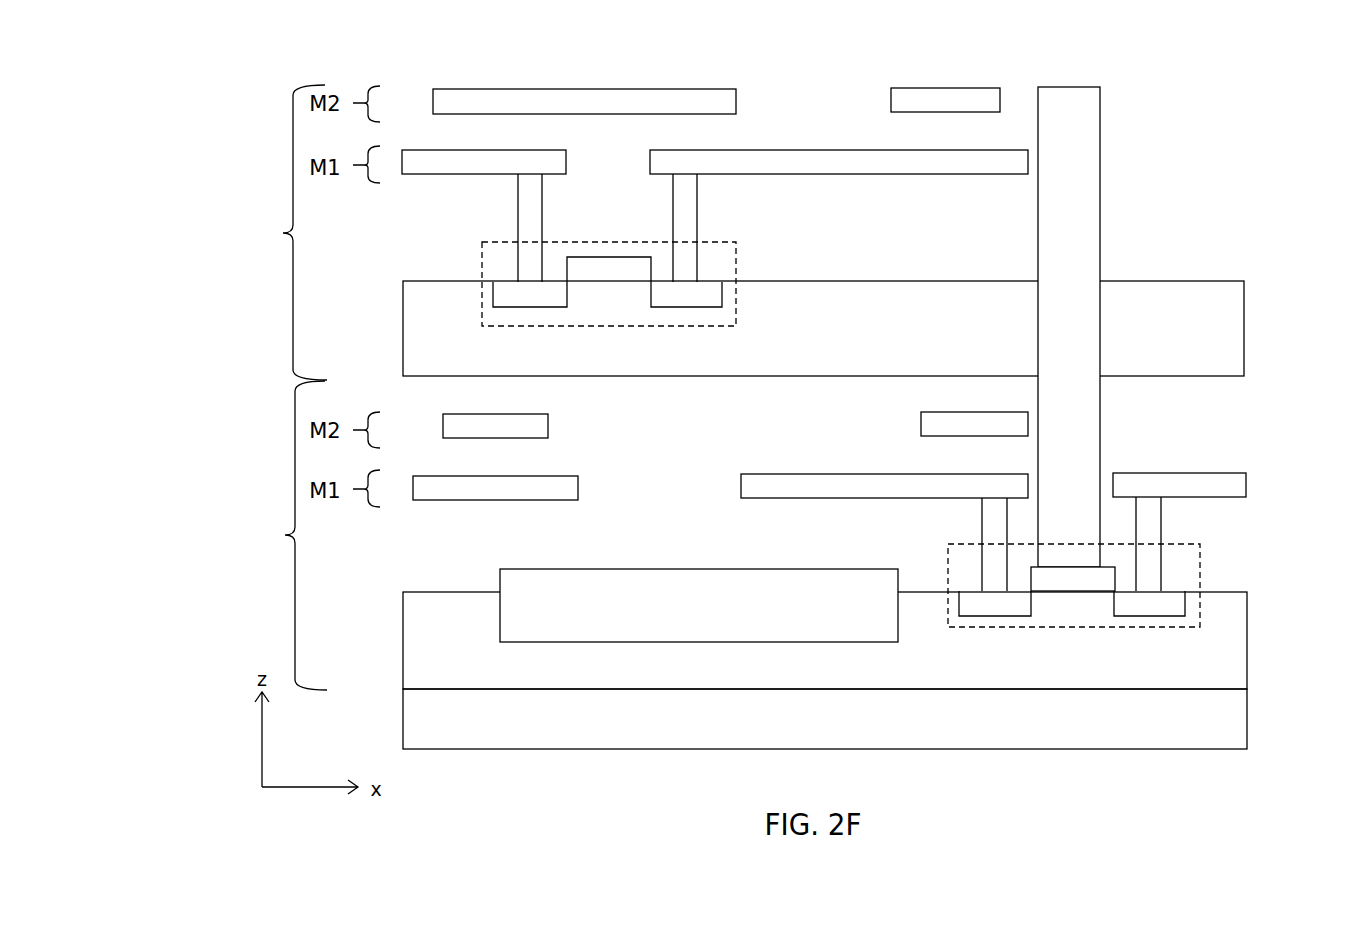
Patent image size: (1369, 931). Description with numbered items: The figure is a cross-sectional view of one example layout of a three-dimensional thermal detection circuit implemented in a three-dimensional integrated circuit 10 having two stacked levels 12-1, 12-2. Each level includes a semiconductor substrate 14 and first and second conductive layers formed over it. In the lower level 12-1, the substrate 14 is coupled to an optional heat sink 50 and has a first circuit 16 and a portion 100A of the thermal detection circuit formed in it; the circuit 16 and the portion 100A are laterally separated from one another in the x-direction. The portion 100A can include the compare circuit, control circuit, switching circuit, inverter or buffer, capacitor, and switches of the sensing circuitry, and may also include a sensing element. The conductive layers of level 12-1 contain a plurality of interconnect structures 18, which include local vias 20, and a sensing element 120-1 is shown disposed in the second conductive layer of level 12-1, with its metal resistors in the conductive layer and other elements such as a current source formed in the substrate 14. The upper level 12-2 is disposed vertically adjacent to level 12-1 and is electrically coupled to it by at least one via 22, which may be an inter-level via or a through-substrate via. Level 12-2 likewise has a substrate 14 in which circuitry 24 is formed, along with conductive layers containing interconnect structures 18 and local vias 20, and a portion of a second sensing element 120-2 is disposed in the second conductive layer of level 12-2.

The 3D IC 10 is at (1223, 94).
The first level 12-1 is at (287, 535).
The second level 12-2 is at (285, 234).
The semiconductor substrate 14 is at (1244, 322).
The first circuit 16 is at (1200, 565).
The interconnect structures 18 is at (610, 114).
The local vias 20 is at (518, 200).
The via 22 is at (1102, 425).
The circuitry 24 is at (736, 258).
The heat sink 50 is at (1247, 718).
The portion of 3D thermal detection circuit 100A is at (500, 570).
The sensing element 120-1 is at (921, 420).
The sensing element 120-2 is at (891, 98).